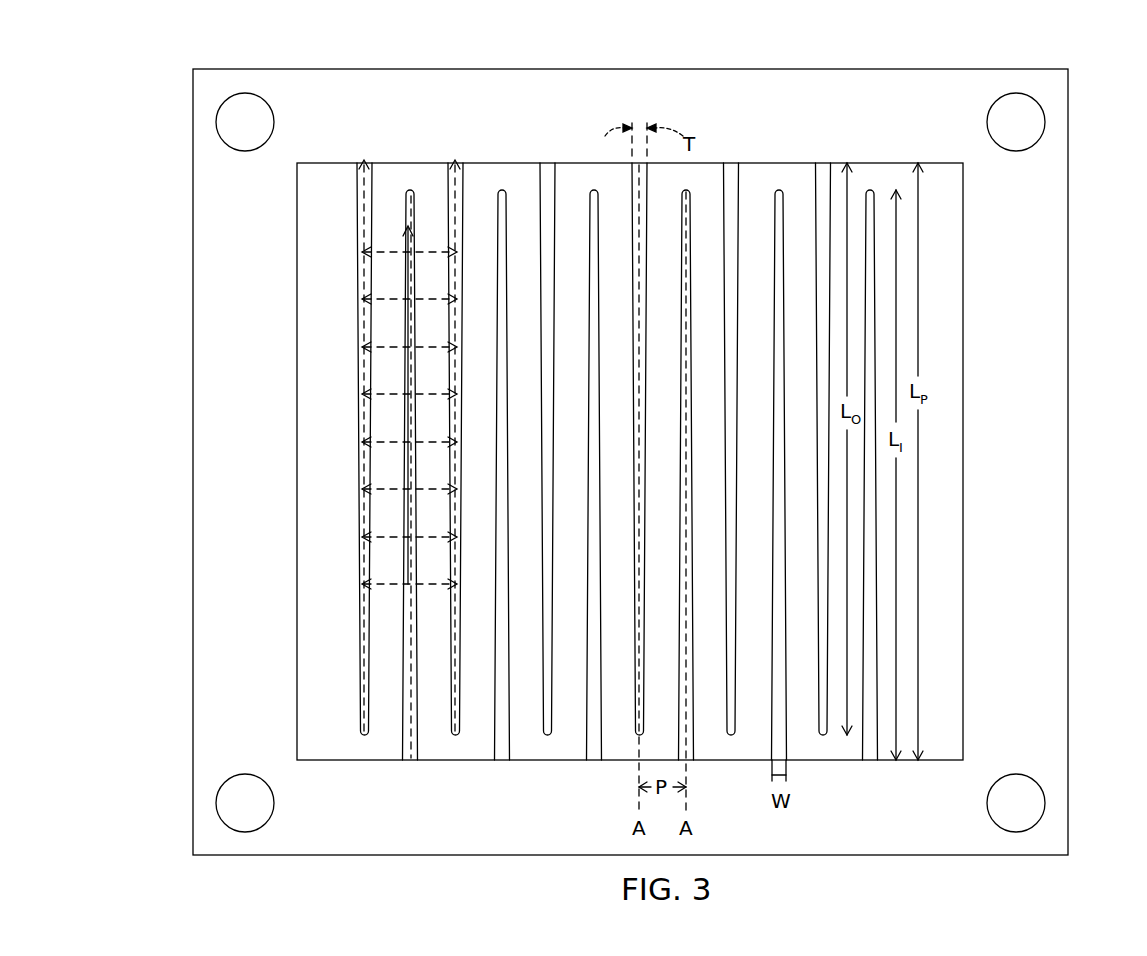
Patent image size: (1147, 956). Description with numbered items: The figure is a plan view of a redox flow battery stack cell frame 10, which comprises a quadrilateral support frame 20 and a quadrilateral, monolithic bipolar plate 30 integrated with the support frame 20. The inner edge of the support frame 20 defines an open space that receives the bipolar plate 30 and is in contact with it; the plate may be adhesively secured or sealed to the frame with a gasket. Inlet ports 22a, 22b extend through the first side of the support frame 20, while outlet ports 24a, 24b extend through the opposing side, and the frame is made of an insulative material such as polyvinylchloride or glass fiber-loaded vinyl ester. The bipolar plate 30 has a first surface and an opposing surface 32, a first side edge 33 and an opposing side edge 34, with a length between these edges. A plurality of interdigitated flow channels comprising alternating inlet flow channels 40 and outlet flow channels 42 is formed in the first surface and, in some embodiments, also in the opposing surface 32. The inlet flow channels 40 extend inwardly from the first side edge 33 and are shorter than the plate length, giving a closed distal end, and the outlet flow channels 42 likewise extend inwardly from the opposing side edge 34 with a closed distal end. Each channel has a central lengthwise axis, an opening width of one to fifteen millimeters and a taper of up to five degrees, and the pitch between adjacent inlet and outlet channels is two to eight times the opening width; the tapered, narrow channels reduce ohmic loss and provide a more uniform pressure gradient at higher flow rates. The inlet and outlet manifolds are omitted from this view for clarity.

The redox flow battery stack cell frame 10 is at (599, 30).
The support frame 20 is at (782, 95).
The inlet port 22a is at (232, 790).
The inlet port 22b is at (1030, 808).
The outlet port 24a is at (1030, 117).
The outlet port 24b is at (230, 120).
The bipolar plate 30 is at (337, 459).
The opposing surface 32 is at (336, 340).
The first side edge 33 is at (537, 762).
The opposing side edge 34 is at (502, 163).
The inlet flow channel 40 is at (409, 762).
The outlet flow channel 42 is at (364, 163).